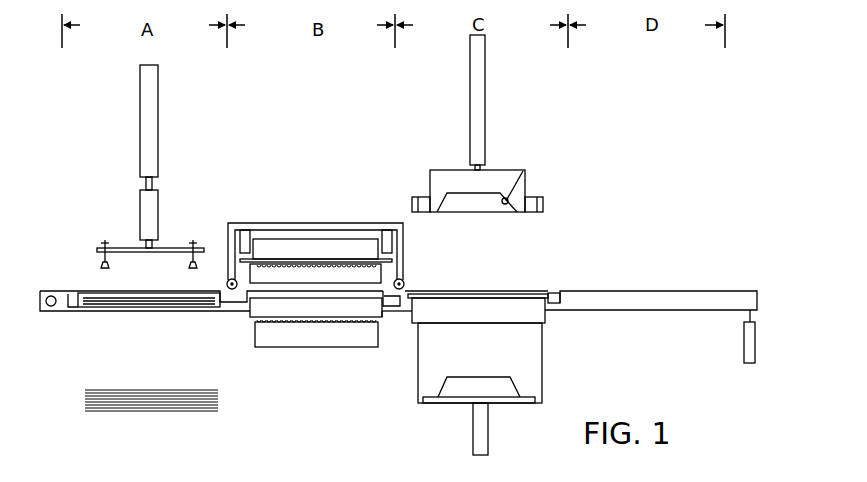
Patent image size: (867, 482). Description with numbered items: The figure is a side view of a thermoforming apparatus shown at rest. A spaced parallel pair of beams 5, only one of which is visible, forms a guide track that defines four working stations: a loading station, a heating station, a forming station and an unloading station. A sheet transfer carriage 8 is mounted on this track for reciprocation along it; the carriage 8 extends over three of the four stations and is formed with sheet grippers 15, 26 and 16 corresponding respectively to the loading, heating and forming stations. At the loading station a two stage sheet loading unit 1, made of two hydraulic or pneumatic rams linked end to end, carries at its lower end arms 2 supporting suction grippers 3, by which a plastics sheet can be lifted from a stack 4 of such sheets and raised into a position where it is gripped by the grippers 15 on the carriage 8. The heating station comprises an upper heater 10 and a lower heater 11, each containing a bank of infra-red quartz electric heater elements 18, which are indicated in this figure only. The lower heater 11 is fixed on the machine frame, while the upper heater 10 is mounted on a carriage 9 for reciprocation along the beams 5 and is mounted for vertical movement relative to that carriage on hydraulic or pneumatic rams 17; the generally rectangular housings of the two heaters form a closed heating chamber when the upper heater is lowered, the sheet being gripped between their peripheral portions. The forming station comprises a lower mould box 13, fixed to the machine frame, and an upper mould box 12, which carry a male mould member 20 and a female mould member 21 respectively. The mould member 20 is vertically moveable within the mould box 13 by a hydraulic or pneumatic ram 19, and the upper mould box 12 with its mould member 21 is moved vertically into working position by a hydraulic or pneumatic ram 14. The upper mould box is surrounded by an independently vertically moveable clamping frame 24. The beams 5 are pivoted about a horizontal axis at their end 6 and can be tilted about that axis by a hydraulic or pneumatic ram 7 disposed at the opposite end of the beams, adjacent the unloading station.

The sheet loading unit 1 is at (141, 111).
The arms 2 is at (104, 247).
The suction grippers 3 is at (100, 266).
The stack 4 is at (82, 397).
The beams 5 is at (665, 290).
The end of beams 6 is at (40, 294).
The hydraulic or pneumatic ram 7 is at (744, 340).
The sheet transfer carriage 8 is at (403, 300).
The carriage 9 is at (355, 223).
The upper heater 10 is at (287, 248).
The lower heater 11 is at (300, 340).
The upper mould box 12 is at (437, 170).
The lower mould box 13 is at (536, 368).
The hydraulic or pneumatic ram 14 is at (470, 96).
The sheet grippers 15 is at (218, 304).
The sheet grippers 16 is at (548, 296).
The hydraulic or pneumatic rams 17 is at (243, 243).
The infra-red quartz electric heater elements 18 is at (318, 262).
The hydraulic or pneumatic ram 19 is at (473, 427).
The male mould member 20 is at (505, 390).
The female mould member 21 is at (508, 196).
The clamping frame 24 is at (543, 202).
The sheet grippers 26 is at (398, 316).